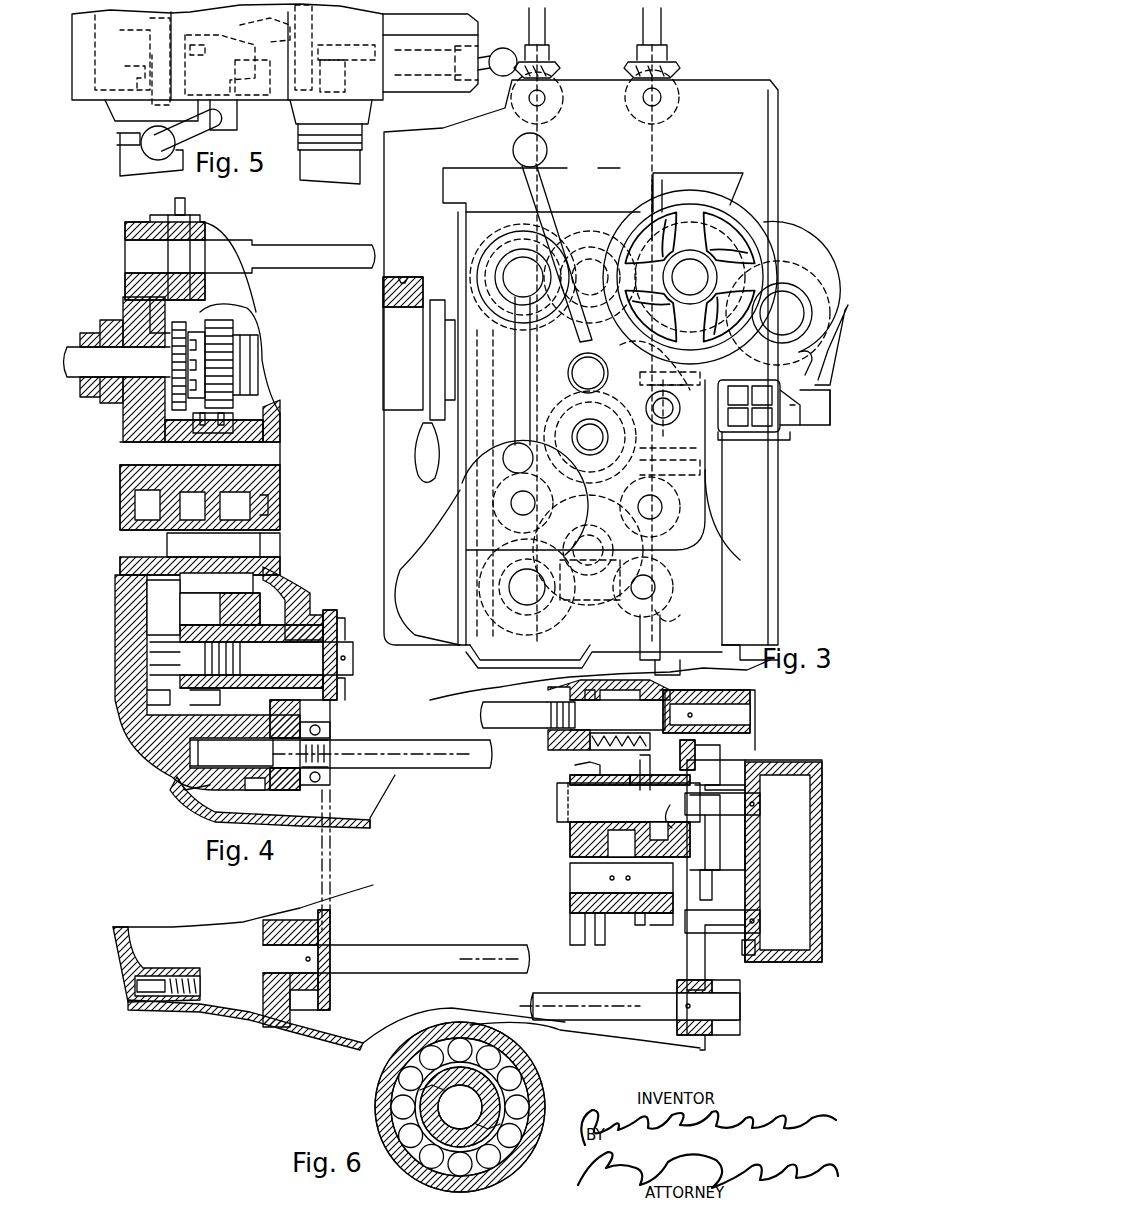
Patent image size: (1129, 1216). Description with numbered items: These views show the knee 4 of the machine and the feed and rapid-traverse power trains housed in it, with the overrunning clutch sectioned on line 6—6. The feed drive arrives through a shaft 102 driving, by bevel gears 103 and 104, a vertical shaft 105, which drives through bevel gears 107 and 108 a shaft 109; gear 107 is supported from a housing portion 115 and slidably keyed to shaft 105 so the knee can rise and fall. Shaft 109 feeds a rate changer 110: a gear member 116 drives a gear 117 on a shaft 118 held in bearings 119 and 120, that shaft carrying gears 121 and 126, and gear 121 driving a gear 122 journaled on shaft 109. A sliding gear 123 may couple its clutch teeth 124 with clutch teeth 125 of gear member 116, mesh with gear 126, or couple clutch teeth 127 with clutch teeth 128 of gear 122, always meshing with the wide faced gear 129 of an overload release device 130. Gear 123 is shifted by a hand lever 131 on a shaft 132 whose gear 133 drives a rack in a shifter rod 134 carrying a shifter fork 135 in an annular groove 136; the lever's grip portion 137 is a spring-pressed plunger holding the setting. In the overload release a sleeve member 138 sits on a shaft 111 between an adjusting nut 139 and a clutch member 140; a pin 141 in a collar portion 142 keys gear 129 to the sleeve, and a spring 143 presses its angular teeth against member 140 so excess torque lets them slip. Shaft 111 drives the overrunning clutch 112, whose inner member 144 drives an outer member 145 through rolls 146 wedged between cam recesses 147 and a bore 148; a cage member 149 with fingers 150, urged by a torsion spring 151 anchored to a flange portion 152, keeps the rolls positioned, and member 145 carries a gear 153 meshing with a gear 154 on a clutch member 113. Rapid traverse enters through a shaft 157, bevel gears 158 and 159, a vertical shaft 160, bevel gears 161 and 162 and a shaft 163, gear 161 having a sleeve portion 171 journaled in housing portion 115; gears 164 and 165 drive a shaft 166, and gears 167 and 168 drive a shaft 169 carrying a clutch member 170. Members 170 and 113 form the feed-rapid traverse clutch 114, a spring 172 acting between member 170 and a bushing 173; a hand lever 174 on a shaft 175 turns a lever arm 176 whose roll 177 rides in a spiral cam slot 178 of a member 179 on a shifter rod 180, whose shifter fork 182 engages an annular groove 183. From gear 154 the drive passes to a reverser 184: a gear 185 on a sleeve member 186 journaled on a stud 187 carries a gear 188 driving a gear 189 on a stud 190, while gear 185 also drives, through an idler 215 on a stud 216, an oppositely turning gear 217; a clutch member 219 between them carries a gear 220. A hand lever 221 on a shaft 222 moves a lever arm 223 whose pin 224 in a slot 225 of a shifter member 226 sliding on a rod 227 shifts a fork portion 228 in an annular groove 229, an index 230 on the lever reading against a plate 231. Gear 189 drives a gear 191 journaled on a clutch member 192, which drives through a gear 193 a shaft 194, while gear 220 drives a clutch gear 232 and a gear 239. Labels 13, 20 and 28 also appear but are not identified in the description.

In FIG. 3, the knee 4 is at (768, 536).
In FIG. 4, the knee 4 is at (352, 824).
In FIG. 4, the section line 6 is at (300, 712).
In FIG. 3, the lever blade 13 is at (422, 475).
In FIG. 3, the gear 20 is at (538, 334).
In FIG. 3, the handwheel 28 is at (778, 232).
In FIG. 3, the shaft 102 is at (562, 100).
In FIG. 3, the bevel gear 103 is at (557, 70).
In FIG. 3, the bevel gear 104 is at (550, 58).
In FIG. 3, the vertical shaft 105 is at (549, 136).
In FIG. 3, the bevel gear 107 is at (565, 632).
In FIG. 3, the bevel gear 108 is at (760, 790).
In FIG. 3, the shaft 109 is at (557, 814).
In FIG. 3, the rate changer 110 is at (630, 839).
In FIG. 4, the shaft 111 is at (418, 768).
In FIG. 6, the shaft 111 is at (418, 1165).
In FIG. 4, the overrunning clutch 112 is at (320, 792).
In FIG. 4, the clutch member 113 is at (332, 708).
In FIG. 4, the feed-rapid traverse clutch 114 is at (163, 704).
In FIG. 3, the housing portion 115 is at (798, 976).
In FIG. 3, the gear member 116 is at (575, 768).
In FIG. 3, the gear 117 is at (610, 936).
In FIG. 3, the shaft 118 is at (570, 878).
In FIG. 3, the bearing 119 is at (665, 916).
In FIG. 3, the bearing 120 is at (570, 905).
In FIG. 3, the gear 121 is at (708, 870).
In FIG. 3, the gear 122 is at (702, 762).
In FIG. 3, the gear 123 is at (640, 770).
In FIG. 3, the clutch teeth 124 is at (660, 793).
In FIG. 3, the clutch teeth 125 is at (600, 793).
In FIG. 3, the gear 126 is at (640, 916).
In FIG. 3, the clutch teeth 127 is at (705, 832).
In FIG. 3, the clutch teeth 128 is at (710, 772).
In FIG. 3, the wide faced gear 129 is at (660, 672).
In FIG. 3, the overload release device 130 is at (690, 692).
In FIG. 3, the hand lever 131 is at (435, 405).
In FIG. 3, the shaft 132 is at (475, 445).
In FIG. 3, the gear 133 is at (488, 485).
In FIG. 3, the shifter rod 134 is at (485, 490).
In FIG. 3, the shifter fork 135 is at (460, 525).
In FIG. 3, the annular groove 136 is at (674, 814).
In FIG. 3, the grip portion 137 is at (400, 270).
In FIG. 3, the sleeve member 138 is at (560, 740).
In FIG. 3, the adjusting nut 139 is at (540, 735).
In FIG. 3, the clutch member 140 is at (750, 716).
In FIG. 3, the pin 141 is at (617, 710).
In FIG. 3, the collar portion 142 is at (548, 688).
In FIG. 3, the spring 143 is at (628, 735).
In FIG. 4, the inner member 144 is at (330, 733).
In FIG. 6, the inner member 144 is at (405, 1118).
In FIG. 4, the outer member 145 is at (250, 784).
In FIG. 6, the outer member 145 is at (545, 1106).
In FIG. 4, the rolls 146 is at (332, 727).
In FIG. 6, the rolls 146 is at (513, 1078).
In FIG. 6, the cam recesses 147 is at (510, 1055).
In FIG. 6, the bore 148 is at (505, 1160).
In FIG. 4, the cage member 149 is at (311, 860).
In FIG. 4, the fingers 150 is at (270, 755).
In FIG. 6, the fingers 150 is at (525, 1140).
In FIG. 4, the torsion spring 151 is at (330, 776).
In FIG. 4, the flange portion 152 is at (330, 760).
In FIG. 4, the gear 153 is at (185, 790).
In FIG. 4, the gear 154 is at (280, 583).
In FIG. 3, the shaft 157 is at (676, 110).
In FIG. 3, the bevel gear 158 is at (680, 82).
In FIG. 3, the bevel gear 159 is at (672, 66).
In FIG. 3, the vertical shaft 160 is at (662, 38).
In FIG. 3, the bevel gear 161 is at (775, 968).
In FIG. 3, the bevel gear 162 is at (663, 580).
In FIG. 3, the shaft 163 is at (745, 905).
In FIG. 3, the gear 164 is at (712, 885).
In FIG. 3, the gear 165 is at (690, 1044).
In FIG. 3, the shaft 166 is at (604, 998).
In FIG. 4, the gear 167 is at (330, 1000).
In FIG. 4, the gear 168 is at (348, 618).
In FIG. 4, the shaft 169 is at (353, 660).
In FIG. 4, the clutch member 170 is at (200, 615).
In FIG. 3, the sleeve portion 171 is at (664, 637).
In FIG. 4, the spring 172 is at (230, 695).
In FIG. 4, the bushing 173 is at (330, 610).
In FIG. 5, the hand lever 174 is at (212, 134).
In FIG. 3, the hand lever 174 is at (555, 205).
In FIG. 5, the shaft 175 is at (257, 77).
In FIG. 5, the lever arm 176 is at (265, 37).
In FIG. 5, the roll 177 is at (232, 28).
In FIG. 5, the spiral cam slot 178 is at (148, 62).
In FIG. 5, the member 179 is at (152, 40).
In FIG. 5, the shifter rod 180 is at (165, 25).
In FIG. 3, the shifter rod 180 is at (505, 330).
In FIG. 3, the shifter fork 182 is at (670, 441).
In FIG. 4, the annular groove 183 is at (163, 607).
In FIG. 4, the reverser 184 is at (250, 415).
In FIG. 4, the gear 185 is at (262, 515).
In FIG. 4, the sleeve member 186 is at (216, 583).
In FIG. 4, the stud 187 is at (280, 549).
In FIG. 4, the gear 188 is at (135, 505).
In FIG. 4, the gear 189 is at (135, 490).
In FIG. 4, the stud 190 is at (120, 452).
In FIG. 4, the gear 191 is at (186, 325).
In FIG. 4, the clutch member 192 is at (228, 318).
In FIG. 4, the gear 193 is at (186, 210).
In FIG. 4, the shaft 194 is at (344, 244).
In FIG. 4, the idler 215 is at (270, 482).
In FIG. 4, the stud 216 is at (268, 502).
In FIG. 4, the gear 217 is at (270, 418).
In FIG. 4, the clutch member 219 is at (195, 506).
In FIG. 3, the gear 220 is at (590, 352).
In FIG. 4, the gear 220 is at (228, 533).
In FIG. 5, the hand lever 221 is at (505, 48).
In FIG. 3, the hand lever 221 is at (828, 426).
In FIG. 5, the shaft 222 is at (417, 70).
In FIG. 3, the shaft 222 is at (792, 425).
In FIG. 5, the lever arm 223 is at (335, 52).
In FIG. 3, the lever arm 223 is at (749, 418).
In FIG. 5, the pin 224 is at (320, 88).
In FIG. 3, the pin 224 is at (681, 374).
In FIG. 3, the slot 225 is at (678, 463).
In FIG. 5, the shifter member 226 is at (318, 36).
In FIG. 3, the shifter member 226 is at (646, 408).
In FIG. 5, the rod 227 is at (288, 104).
In FIG. 3, the rod 227 is at (658, 420).
In FIG. 3, the fork portion 228 is at (666, 365).
In FIG. 4, the annular groove 229 is at (213, 545).
In FIG. 3, the index 230 is at (782, 400).
In FIG. 3, the plate 231 is at (750, 440).
In FIG. 3, the clutch gear 232 is at (742, 205).
In FIG. 4, the clutch gear 232 is at (240, 318).
In FIG. 3, the gear 239 is at (608, 215).